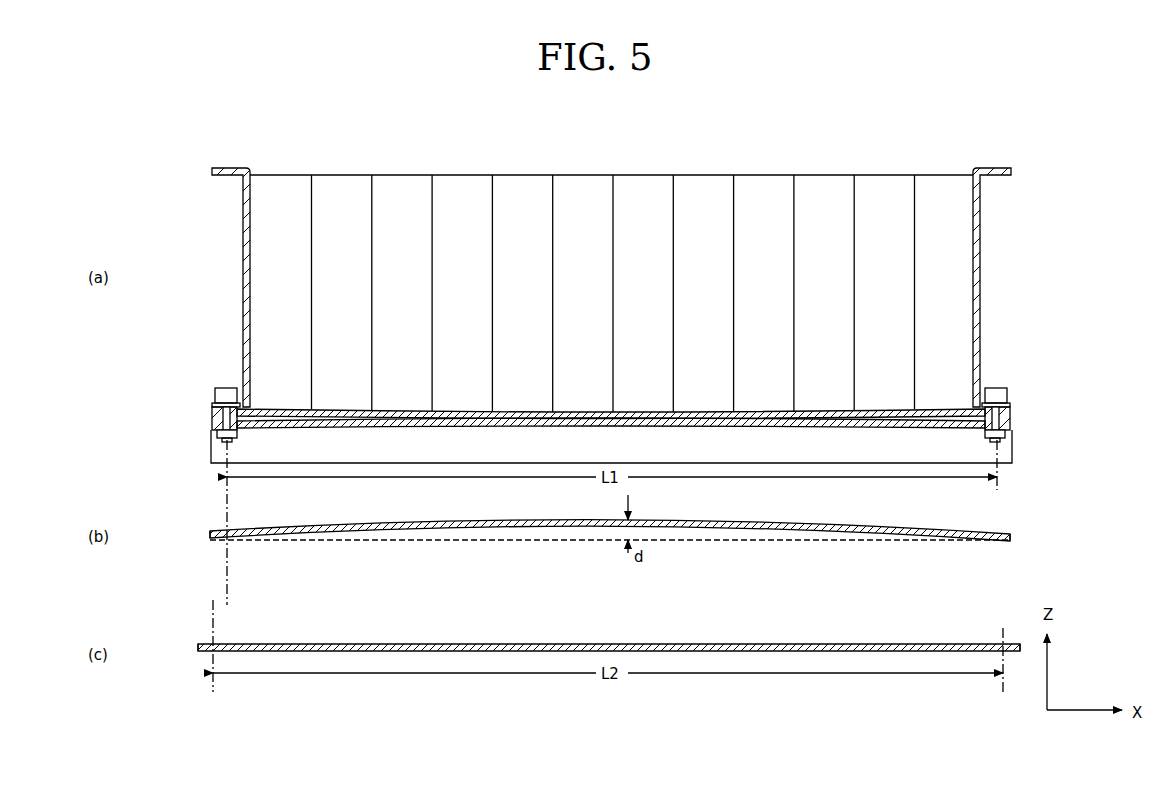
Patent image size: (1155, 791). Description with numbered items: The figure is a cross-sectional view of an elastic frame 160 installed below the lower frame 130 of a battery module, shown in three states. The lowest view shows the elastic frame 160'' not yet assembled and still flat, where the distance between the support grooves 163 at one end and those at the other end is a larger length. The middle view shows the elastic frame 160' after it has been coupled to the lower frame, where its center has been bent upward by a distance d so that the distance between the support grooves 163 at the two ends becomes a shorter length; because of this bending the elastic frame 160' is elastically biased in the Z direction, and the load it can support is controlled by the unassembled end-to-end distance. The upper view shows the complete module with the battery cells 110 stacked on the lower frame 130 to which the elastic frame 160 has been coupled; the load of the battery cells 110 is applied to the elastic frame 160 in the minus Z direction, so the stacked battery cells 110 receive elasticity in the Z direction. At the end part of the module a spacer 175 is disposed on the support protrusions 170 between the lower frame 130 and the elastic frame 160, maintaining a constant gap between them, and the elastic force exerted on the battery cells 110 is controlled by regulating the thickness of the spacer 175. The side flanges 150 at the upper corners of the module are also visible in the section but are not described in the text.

The battery cells 110 is at (403, 190).
The side wall flange 150 is at (233, 172).
The support protrusions 170 is at (225, 393).
The lower frame 130 is at (212, 412).
The spacer 175 is at (212, 421).
The elastic frame 160 is at (608, 440).
The support grooves 163 is at (225, 530).
The elastic frame (assembled) 160' is at (610, 558).
The elastic frame (not yet assembled) 160'' is at (609, 691).